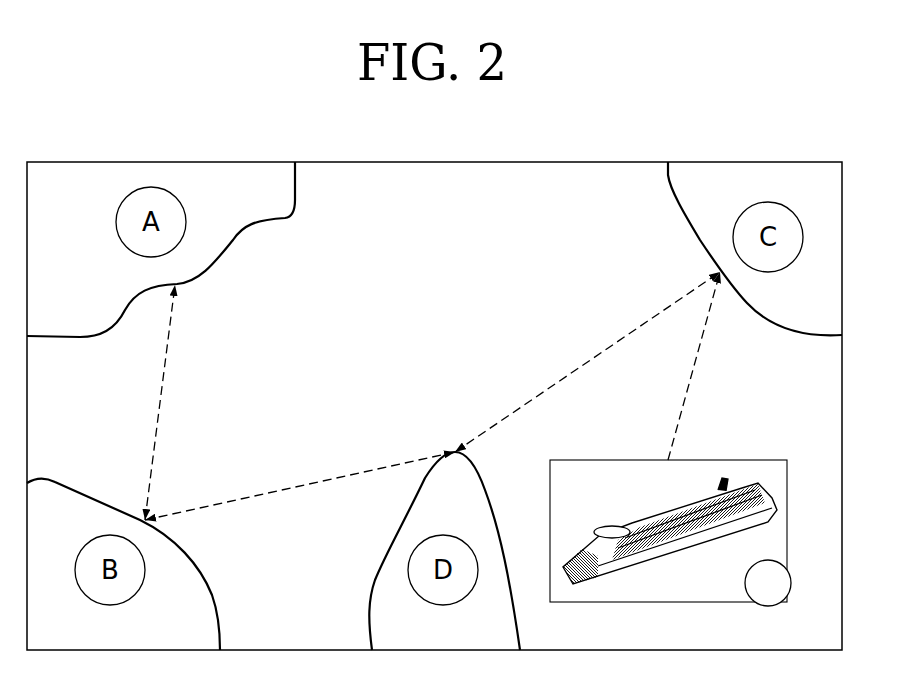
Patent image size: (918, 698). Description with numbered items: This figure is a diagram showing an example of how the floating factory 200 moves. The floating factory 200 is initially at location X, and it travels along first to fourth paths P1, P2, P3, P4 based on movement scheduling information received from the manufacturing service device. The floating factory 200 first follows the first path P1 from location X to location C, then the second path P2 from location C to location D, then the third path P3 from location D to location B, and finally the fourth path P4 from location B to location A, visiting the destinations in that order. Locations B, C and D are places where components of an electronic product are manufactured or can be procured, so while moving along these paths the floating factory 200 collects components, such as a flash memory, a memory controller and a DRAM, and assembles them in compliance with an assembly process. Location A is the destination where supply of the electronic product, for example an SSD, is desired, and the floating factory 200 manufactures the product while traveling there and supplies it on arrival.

The first path P1 is at (700, 347).
The second path P2 is at (575, 370).
The third path P3 is at (323, 481).
The fourth path P4 is at (165, 365).
The floating factory 200 is at (742, 460).